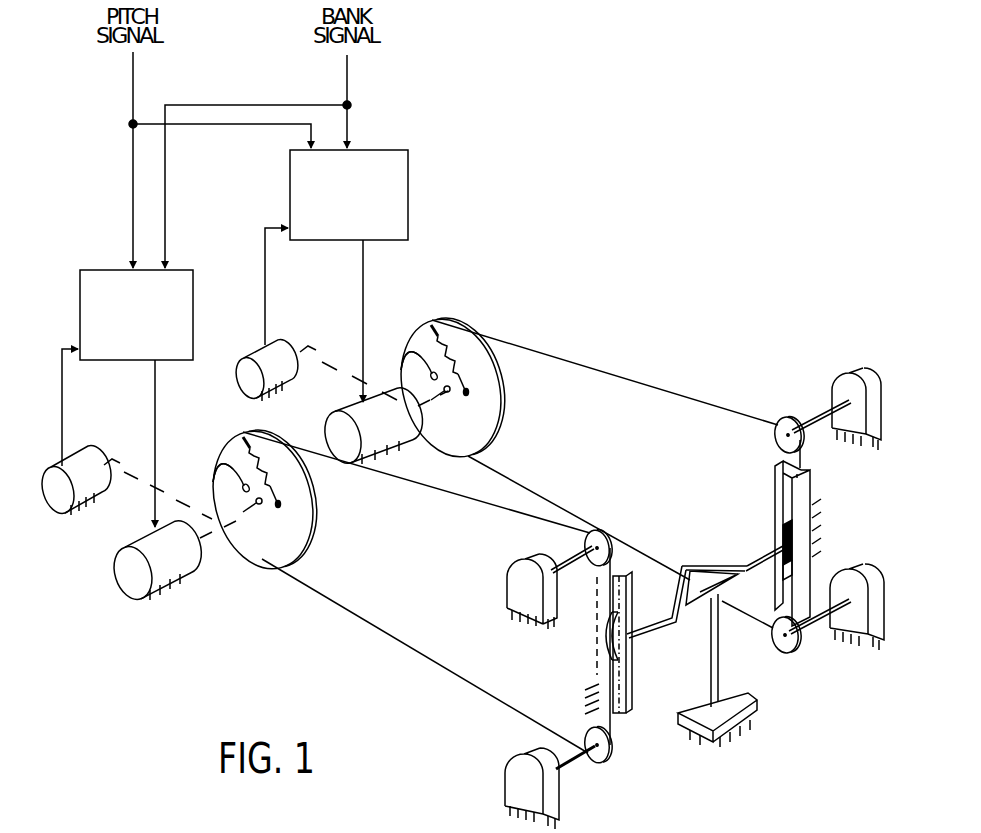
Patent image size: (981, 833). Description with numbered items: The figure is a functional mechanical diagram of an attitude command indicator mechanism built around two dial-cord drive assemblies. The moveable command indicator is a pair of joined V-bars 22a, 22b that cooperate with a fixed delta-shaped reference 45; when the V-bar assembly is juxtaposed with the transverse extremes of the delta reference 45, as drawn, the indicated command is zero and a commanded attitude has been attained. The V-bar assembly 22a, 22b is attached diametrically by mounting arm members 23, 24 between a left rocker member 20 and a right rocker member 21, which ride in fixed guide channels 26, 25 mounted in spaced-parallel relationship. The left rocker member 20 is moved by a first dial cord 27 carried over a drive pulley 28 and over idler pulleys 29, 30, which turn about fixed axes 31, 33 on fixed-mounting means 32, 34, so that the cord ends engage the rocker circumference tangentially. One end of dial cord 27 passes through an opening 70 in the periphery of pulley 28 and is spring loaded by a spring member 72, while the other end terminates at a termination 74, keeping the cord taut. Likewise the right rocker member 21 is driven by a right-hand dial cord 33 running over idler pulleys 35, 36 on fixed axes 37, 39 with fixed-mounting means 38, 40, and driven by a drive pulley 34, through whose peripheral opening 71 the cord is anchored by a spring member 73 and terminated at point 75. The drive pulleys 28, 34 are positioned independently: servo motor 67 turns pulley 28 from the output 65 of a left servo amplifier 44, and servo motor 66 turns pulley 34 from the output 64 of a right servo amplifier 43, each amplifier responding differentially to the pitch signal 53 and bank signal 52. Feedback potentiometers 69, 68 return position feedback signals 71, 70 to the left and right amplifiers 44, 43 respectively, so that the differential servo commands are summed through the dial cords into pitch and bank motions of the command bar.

The rocker member 20 is at (634, 670).
The rocker member 21 is at (776, 520).
The V-bar 22a is at (668, 575).
The V-bar 22b is at (716, 564).
The mounting arm member 23 is at (652, 614).
The mounting arm member 24 is at (767, 542).
The fixed guide channel 25 is at (824, 474).
The fixed guide channel 26 is at (594, 659).
The first dial cord 27 is at (464, 498).
The drive pulley 28 is at (265, 499).
The idler pulley 29 is at (603, 531).
The idler pulley 30 is at (605, 762).
The fixed axis 31 is at (564, 552).
The fixed-mounting means 32 is at (506, 575).
The right-hand dial cord 33 is at (662, 372).
The drive pulley 34 is at (465, 568).
The idler pulley 35 is at (778, 422).
The idler pulley 36 is at (784, 652).
The fixed axis 37 is at (814, 417).
The fixed-mounting means 38 is at (844, 370).
The shaft 39 is at (810, 635).
The fixed-mounting means 40 is at (862, 570).
The right servo amplifier 43 is at (372, 150).
The left servo amplifier 44 is at (86, 268).
The fixed delta-shaped reference 45 is at (698, 608).
The bank indicative input signal 52 is at (348, 75).
The pitch indicative input signal 53 is at (134, 80).
The output of right servo amplifier 64 is at (364, 268).
The output of left servo amplifier 65 is at (156, 372).
The servo motor 66 is at (338, 410).
The servo motor 67 is at (128, 535).
The feedback potentiometer 68 is at (242, 352).
The feedback potentiometer 69 is at (78, 460).
The position feedback signal 70 is at (266, 255).
The position feedback signal 71 is at (63, 390).
The spring member 72 is at (295, 475).
The spring member 73 is at (479, 357).
The termination 74 is at (205, 483).
The termination point 75 is at (396, 366).